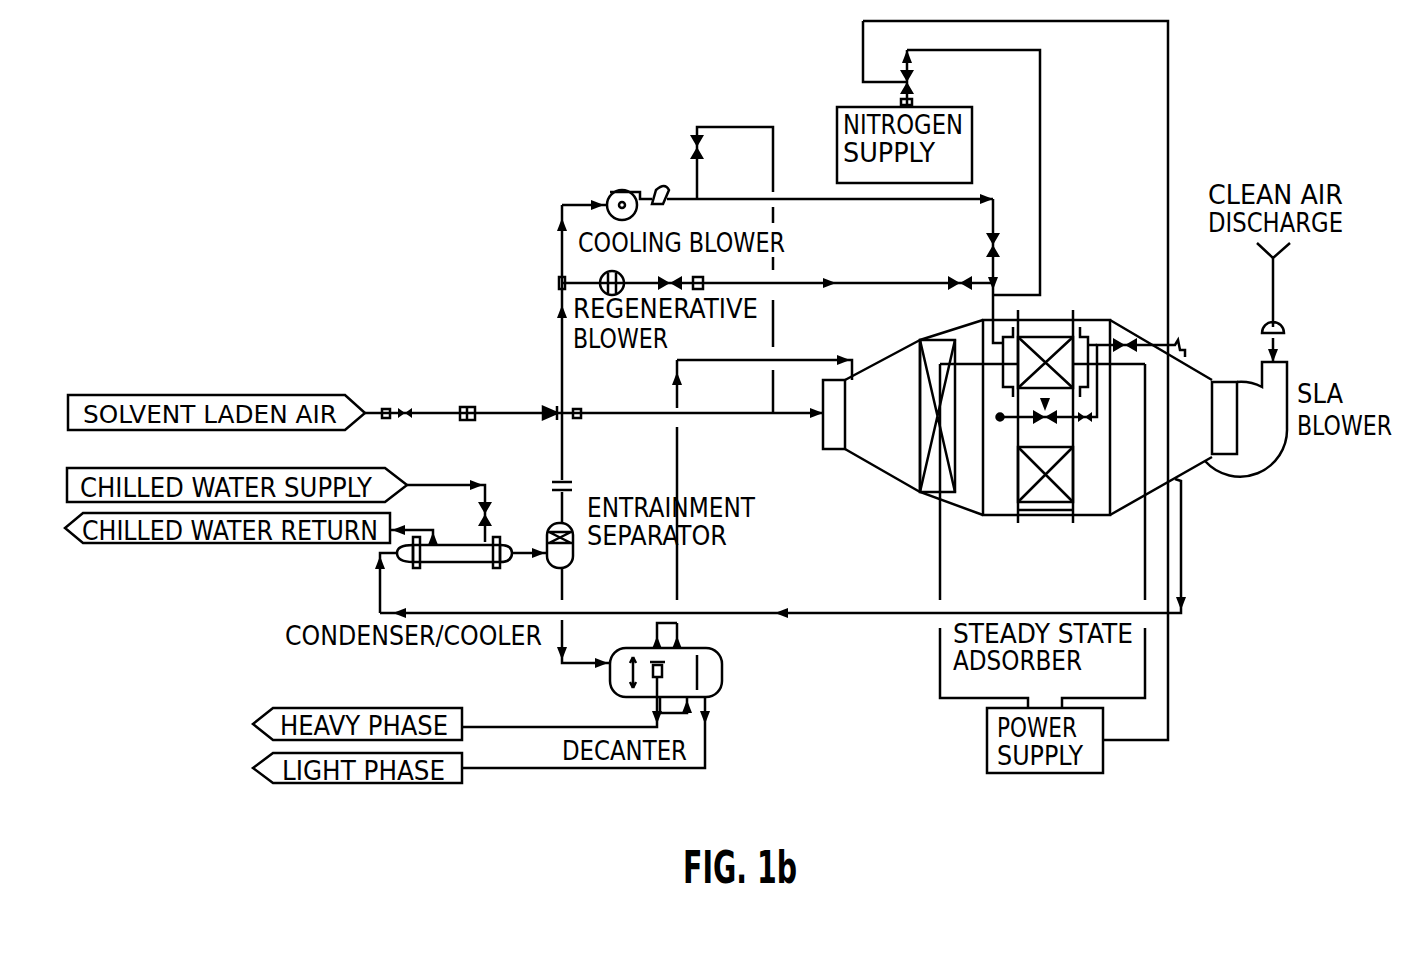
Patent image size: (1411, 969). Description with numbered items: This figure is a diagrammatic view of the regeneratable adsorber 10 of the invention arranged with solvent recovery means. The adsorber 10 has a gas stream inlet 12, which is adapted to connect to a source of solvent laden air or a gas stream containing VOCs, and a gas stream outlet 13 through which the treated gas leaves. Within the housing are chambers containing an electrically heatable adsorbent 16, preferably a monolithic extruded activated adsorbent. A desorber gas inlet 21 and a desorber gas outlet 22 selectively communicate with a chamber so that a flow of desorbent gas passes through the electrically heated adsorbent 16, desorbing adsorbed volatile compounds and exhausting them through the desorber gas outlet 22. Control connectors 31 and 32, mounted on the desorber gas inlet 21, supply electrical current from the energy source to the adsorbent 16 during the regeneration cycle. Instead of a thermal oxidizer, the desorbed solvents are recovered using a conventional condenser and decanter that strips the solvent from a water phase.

The regeneratable adsorber 10 is at (993, 517).
The gas stream inlet 12 is at (822, 428).
The gas stream outlet 13 is at (1240, 433).
The electrically heatable adsorbent 16 is at (1050, 517).
The desorber gas inlet 21 is at (1000, 362).
The desorber gas outlet 22 is at (1085, 347).
The control connector 31 is at (1042, 357).
The control connector 32 is at (1062, 348).